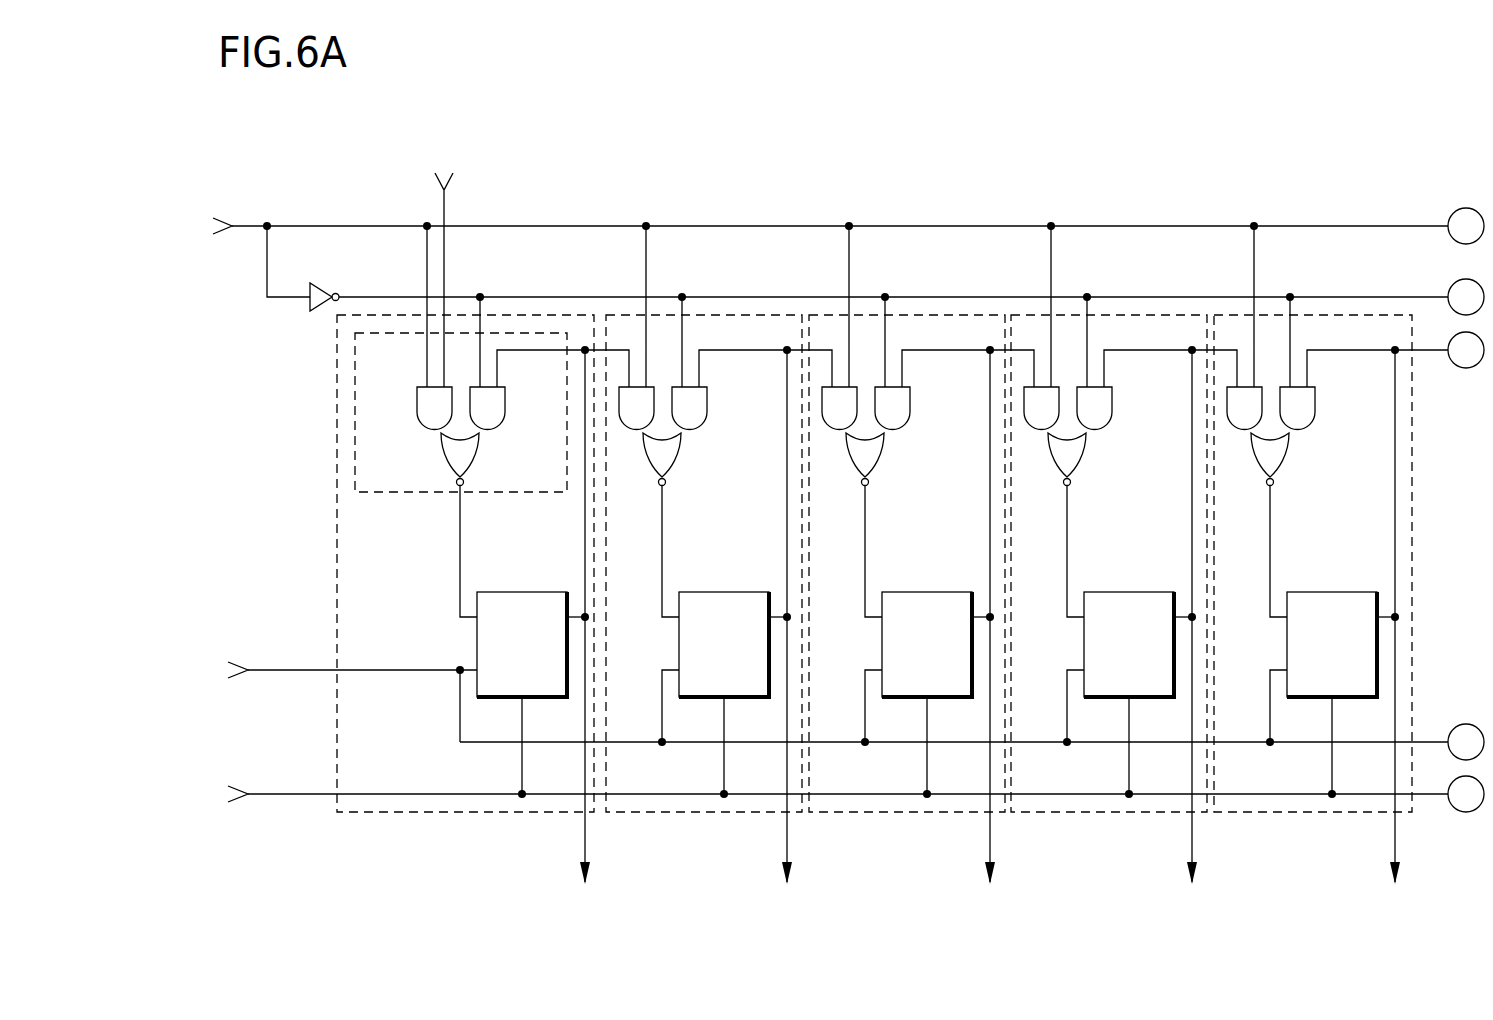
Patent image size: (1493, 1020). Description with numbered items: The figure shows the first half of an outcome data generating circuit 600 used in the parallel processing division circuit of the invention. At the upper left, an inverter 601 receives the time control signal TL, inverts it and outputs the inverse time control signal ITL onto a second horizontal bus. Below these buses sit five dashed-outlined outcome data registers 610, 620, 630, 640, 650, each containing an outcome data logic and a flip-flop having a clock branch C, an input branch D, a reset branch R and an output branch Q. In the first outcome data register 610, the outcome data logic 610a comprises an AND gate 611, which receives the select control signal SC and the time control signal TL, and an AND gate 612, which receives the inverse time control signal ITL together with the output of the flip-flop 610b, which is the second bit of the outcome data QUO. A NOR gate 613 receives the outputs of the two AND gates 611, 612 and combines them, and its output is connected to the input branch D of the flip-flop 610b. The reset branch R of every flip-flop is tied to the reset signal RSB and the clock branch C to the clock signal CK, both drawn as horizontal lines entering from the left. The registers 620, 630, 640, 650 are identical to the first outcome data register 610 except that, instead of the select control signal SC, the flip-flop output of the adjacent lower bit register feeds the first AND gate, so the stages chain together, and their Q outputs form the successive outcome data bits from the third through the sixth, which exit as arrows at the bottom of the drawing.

The outcome data generating circuit 600 is at (329, 154).
The inverter 601 is at (317, 283).
The first outcome data register 610 is at (459, 812).
The outcome data logic 610a is at (407, 492).
The flip-flop 610b is at (523, 592).
The AND gate 611 is at (410, 408).
The AND gate 612 is at (515, 408).
The NOR gate 613 is at (488, 459).
The outcome data register 620 is at (688, 812).
The outcome data register 630 is at (890, 812).
The outcome data register 640 is at (1091, 812).
The outcome data register 650 is at (1305, 812).